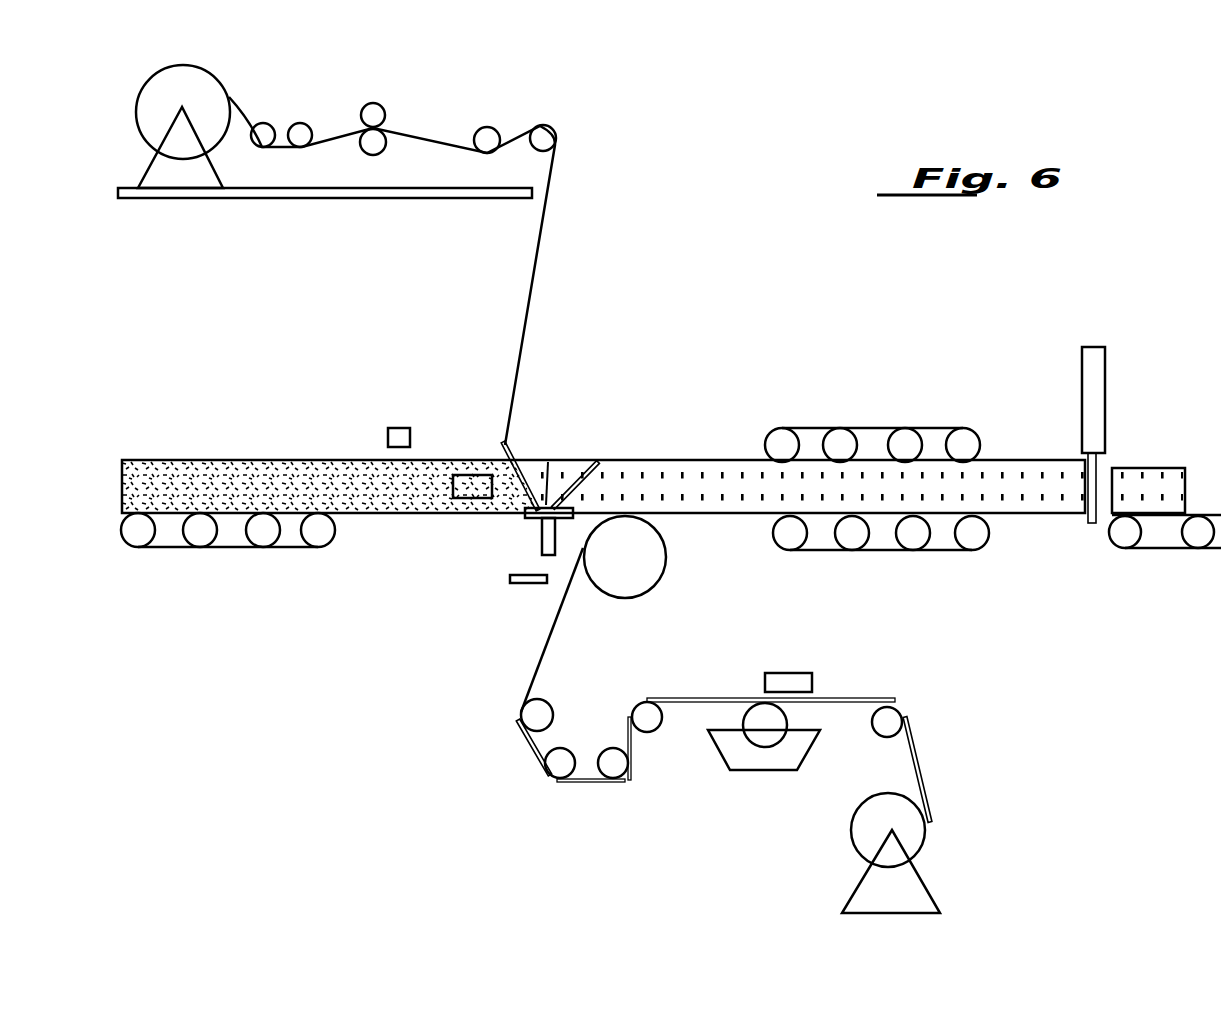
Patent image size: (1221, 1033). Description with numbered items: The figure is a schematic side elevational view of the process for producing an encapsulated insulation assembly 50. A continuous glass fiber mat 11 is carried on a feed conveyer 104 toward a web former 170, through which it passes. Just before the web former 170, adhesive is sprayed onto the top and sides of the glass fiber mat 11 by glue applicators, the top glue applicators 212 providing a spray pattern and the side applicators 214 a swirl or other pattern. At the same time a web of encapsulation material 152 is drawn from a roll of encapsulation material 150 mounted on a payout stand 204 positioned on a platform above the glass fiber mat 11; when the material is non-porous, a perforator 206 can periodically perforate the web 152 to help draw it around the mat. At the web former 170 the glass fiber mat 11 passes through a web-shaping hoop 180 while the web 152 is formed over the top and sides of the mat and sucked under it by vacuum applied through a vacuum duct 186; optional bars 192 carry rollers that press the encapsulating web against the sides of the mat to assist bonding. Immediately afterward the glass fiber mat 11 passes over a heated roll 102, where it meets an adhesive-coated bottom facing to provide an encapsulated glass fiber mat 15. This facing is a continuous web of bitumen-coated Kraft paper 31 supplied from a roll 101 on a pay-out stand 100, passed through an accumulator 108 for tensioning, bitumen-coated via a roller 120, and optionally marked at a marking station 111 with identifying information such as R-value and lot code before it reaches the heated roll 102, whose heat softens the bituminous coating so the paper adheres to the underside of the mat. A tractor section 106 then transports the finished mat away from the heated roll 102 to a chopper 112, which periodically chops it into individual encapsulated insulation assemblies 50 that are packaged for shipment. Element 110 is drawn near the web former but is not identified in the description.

The glass fiber mat 11 is at (348, 488).
The encapsulated glass fiber mat 15 is at (1020, 487).
The web of bitumen-coated Kraft paper 31 is at (530, 673).
The encapsulated insulation assembly 50 is at (1150, 478).
The pay-out stand 100 is at (918, 837).
The roll 101 is at (887, 875).
The heated roll 102 is at (643, 558).
The feed conveyer 104 is at (233, 528).
The tractor section 106 is at (883, 537).
The accumulator 108 is at (557, 762).
The guide 110 is at (523, 585).
The marking station 111 is at (787, 675).
The chopper 112 is at (1088, 370).
The roller 120 is at (757, 728).
The roll of encapsulation material 150 is at (193, 88).
The web of encapsulation material 152 is at (537, 267).
The web former 170 is at (548, 462).
The web-shaping hoop 180 is at (510, 448).
The vacuum duct 186 is at (543, 533).
The bars 192 is at (585, 458).
The payout stand 204 is at (180, 142).
The perforator 206 is at (377, 112).
The top glue applicators 212 is at (396, 428).
The side applicators 214 is at (467, 497).